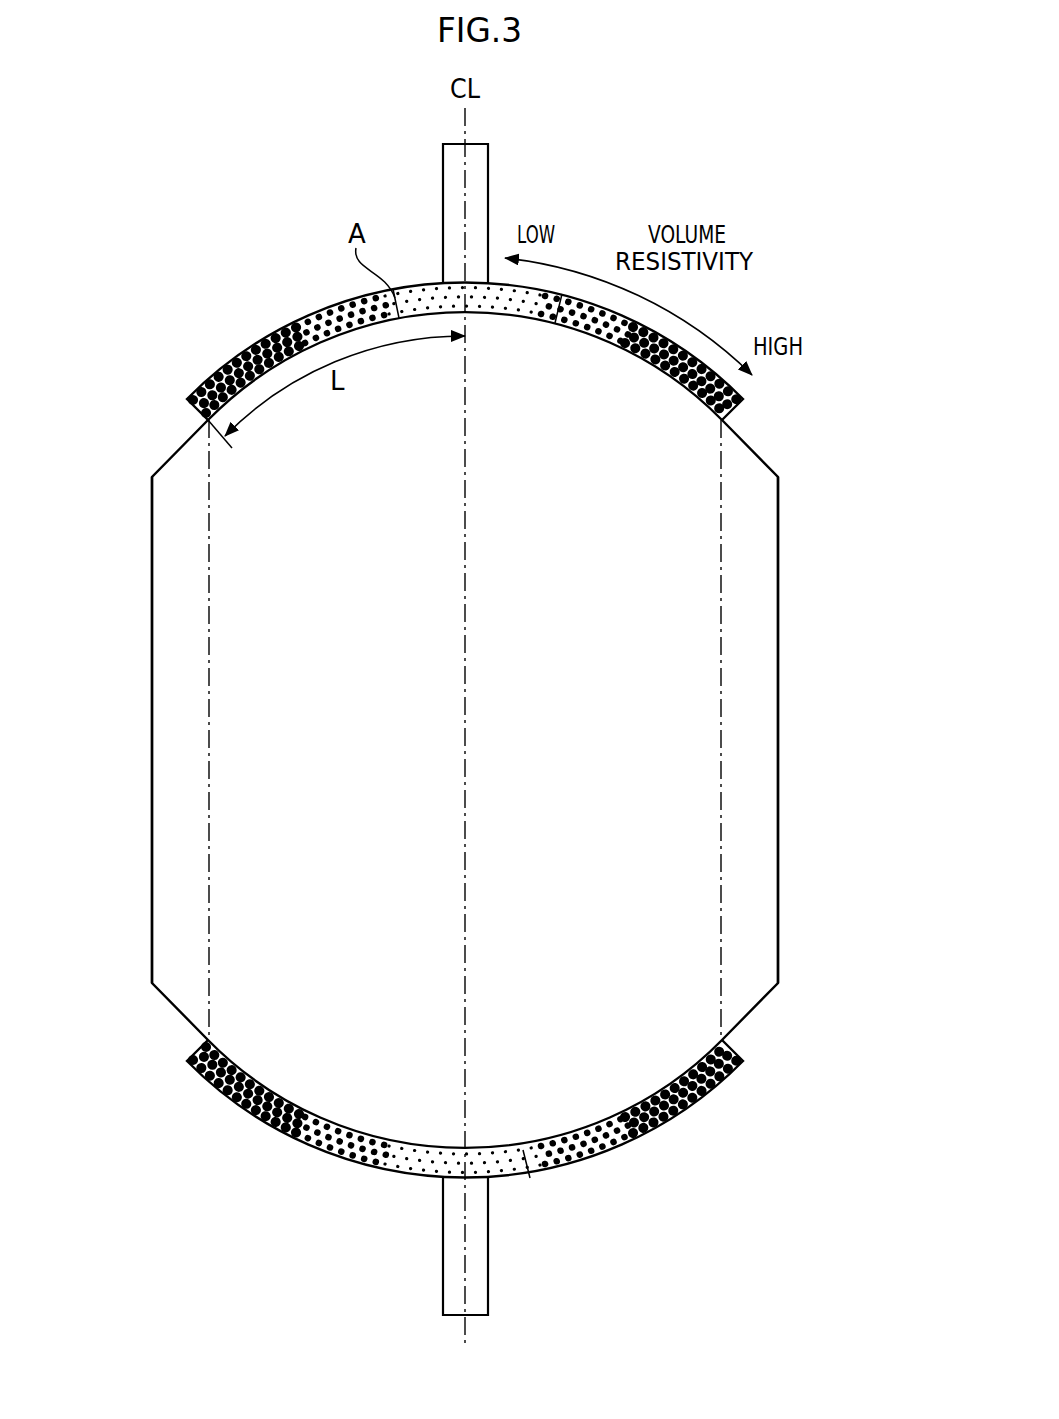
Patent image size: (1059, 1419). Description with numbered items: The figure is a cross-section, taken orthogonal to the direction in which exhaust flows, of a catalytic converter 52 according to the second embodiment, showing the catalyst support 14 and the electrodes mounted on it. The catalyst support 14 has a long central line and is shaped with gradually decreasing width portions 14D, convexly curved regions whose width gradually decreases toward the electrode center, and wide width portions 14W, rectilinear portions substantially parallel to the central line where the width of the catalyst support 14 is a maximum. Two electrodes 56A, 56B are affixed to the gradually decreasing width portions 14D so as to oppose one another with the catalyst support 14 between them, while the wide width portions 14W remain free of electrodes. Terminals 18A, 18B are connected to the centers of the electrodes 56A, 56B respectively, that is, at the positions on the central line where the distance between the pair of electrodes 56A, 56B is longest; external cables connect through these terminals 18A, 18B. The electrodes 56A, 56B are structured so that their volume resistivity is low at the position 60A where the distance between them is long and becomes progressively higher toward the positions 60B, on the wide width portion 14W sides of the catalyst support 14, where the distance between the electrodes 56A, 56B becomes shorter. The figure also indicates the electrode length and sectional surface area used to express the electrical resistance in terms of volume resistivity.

The catalyst support 14 is at (150, 770).
The wide width portions 14W is at (150, 722).
The gradually decreasing width portions 14D is at (443, 310).
The terminal 18A is at (490, 172).
The terminal 18B is at (487, 1258).
The catalytic converter 52 is at (213, 308).
The electrode 56A is at (292, 323).
The electrode 56B is at (348, 1162).
The position where the distance between the pair of electrodes is long 60A is at (466, 637).
The positions where the distance between the pair of electrodes becomes shorter 60B is at (209, 637).